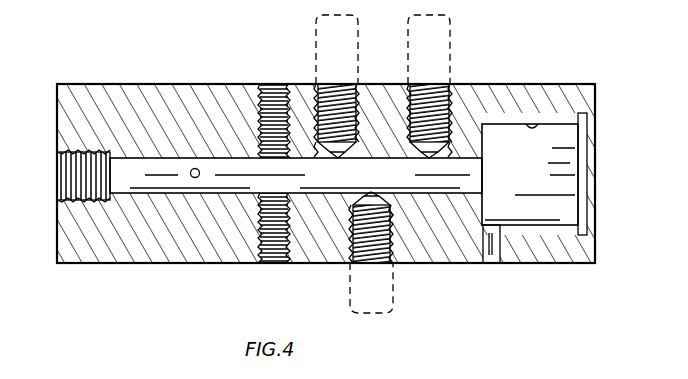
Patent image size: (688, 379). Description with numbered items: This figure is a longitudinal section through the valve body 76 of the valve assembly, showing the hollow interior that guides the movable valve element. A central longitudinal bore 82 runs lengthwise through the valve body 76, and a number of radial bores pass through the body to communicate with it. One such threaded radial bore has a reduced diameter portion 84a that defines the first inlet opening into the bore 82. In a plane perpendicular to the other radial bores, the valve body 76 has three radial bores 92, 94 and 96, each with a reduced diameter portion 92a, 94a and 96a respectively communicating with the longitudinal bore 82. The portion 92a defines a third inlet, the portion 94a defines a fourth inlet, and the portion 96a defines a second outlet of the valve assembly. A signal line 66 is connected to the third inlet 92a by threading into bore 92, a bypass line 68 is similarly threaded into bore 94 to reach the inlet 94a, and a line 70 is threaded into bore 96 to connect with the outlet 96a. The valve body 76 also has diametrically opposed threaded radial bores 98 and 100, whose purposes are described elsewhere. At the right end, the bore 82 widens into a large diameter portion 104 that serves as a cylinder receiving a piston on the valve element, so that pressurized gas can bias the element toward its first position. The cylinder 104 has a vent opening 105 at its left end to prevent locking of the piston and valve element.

The valve body 76 is at (80, 84).
The central longitudinal bore 82 is at (138, 163).
The reduced diameter portion 84a is at (195, 169).
The threaded radial bore 100 is at (262, 85).
The threaded radial bore 98 is at (268, 265).
The radial bore 94 is at (322, 82).
The reduced diameter portion 94a is at (345, 150).
The bypass line 68 is at (355, 84).
The radial bore 92 is at (450, 78).
The reduced diameter portion 92a is at (447, 125).
The signal line 66 is at (452, 38).
The radial bore 96 is at (353, 265).
The reduced diameter portion 96a is at (398, 248).
The line 70 is at (394, 298).
The large diameter portion of the bore 104 is at (532, 126).
The vent opening 105 is at (492, 262).